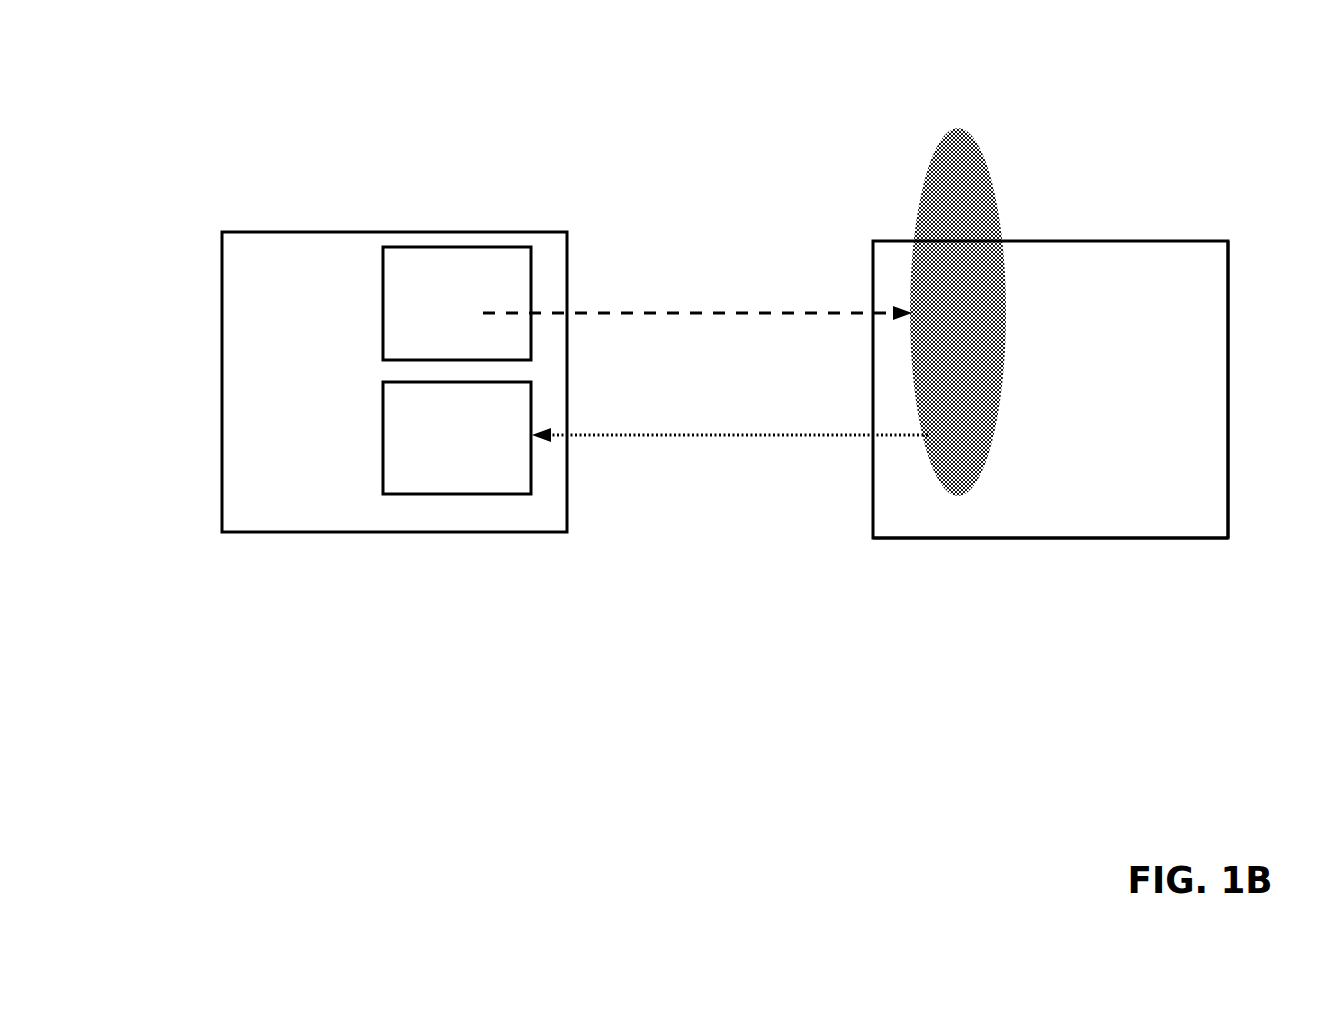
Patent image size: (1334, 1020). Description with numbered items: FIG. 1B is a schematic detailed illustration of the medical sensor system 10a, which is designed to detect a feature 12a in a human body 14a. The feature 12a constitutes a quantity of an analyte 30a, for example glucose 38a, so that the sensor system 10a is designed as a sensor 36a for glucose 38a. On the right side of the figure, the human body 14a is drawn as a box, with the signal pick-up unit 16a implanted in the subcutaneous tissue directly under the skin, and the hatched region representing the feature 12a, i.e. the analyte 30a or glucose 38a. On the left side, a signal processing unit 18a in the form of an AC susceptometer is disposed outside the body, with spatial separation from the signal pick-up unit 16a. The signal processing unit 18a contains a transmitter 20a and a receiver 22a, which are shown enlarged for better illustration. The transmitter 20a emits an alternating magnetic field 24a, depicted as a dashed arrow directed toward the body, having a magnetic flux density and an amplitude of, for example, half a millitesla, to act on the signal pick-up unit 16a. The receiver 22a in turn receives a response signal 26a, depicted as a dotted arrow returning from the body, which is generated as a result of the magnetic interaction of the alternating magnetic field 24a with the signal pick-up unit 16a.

The medical sensor system 10a is at (1185, 138).
The feature 12a is at (982, 203).
The human body 14a is at (1050, 210).
The signal pick-up unit 16a is at (995, 512).
The signal processing unit 18a is at (260, 505).
The transmitter 20a is at (493, 272).
The receiver 22a is at (469, 470).
The alternating magnetic field 24a is at (753, 312).
The response signal 26a is at (698, 437).
The analyte 30a is at (947, 202).
The sensor 36a is at (1158, 502).
The glucose 38a is at (945, 263).